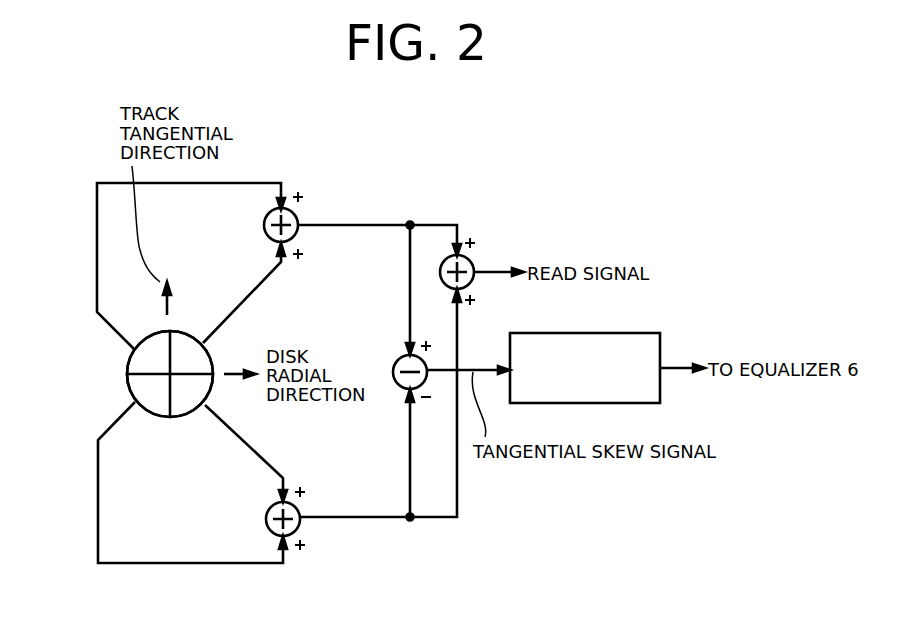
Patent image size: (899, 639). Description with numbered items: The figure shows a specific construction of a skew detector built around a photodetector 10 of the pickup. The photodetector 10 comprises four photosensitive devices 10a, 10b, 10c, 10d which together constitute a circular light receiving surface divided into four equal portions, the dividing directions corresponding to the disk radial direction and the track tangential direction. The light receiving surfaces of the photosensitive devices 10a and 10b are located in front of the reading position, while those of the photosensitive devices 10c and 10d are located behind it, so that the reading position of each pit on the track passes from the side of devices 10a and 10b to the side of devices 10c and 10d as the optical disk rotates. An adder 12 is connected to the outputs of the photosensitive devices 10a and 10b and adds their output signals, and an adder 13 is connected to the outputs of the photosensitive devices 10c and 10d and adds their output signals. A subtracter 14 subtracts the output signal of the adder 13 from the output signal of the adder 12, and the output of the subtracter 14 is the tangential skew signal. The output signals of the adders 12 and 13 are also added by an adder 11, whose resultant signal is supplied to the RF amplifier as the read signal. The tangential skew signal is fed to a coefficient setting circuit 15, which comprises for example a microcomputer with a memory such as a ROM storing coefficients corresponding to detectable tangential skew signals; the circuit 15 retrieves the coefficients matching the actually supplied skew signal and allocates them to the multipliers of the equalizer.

The photodetector 10 is at (118, 400).
The photosensitive device 10a is at (130, 355).
The photosensitive device 10b is at (186, 332).
The photosensitive device 10c is at (190, 416).
The photosensitive device 10d is at (147, 415).
The adder 11 is at (470, 262).
The adder 12 is at (297, 217).
The adder 13 is at (266, 524).
The subtracter 14 is at (396, 358).
The coefficient setting circuit 15 is at (646, 332).